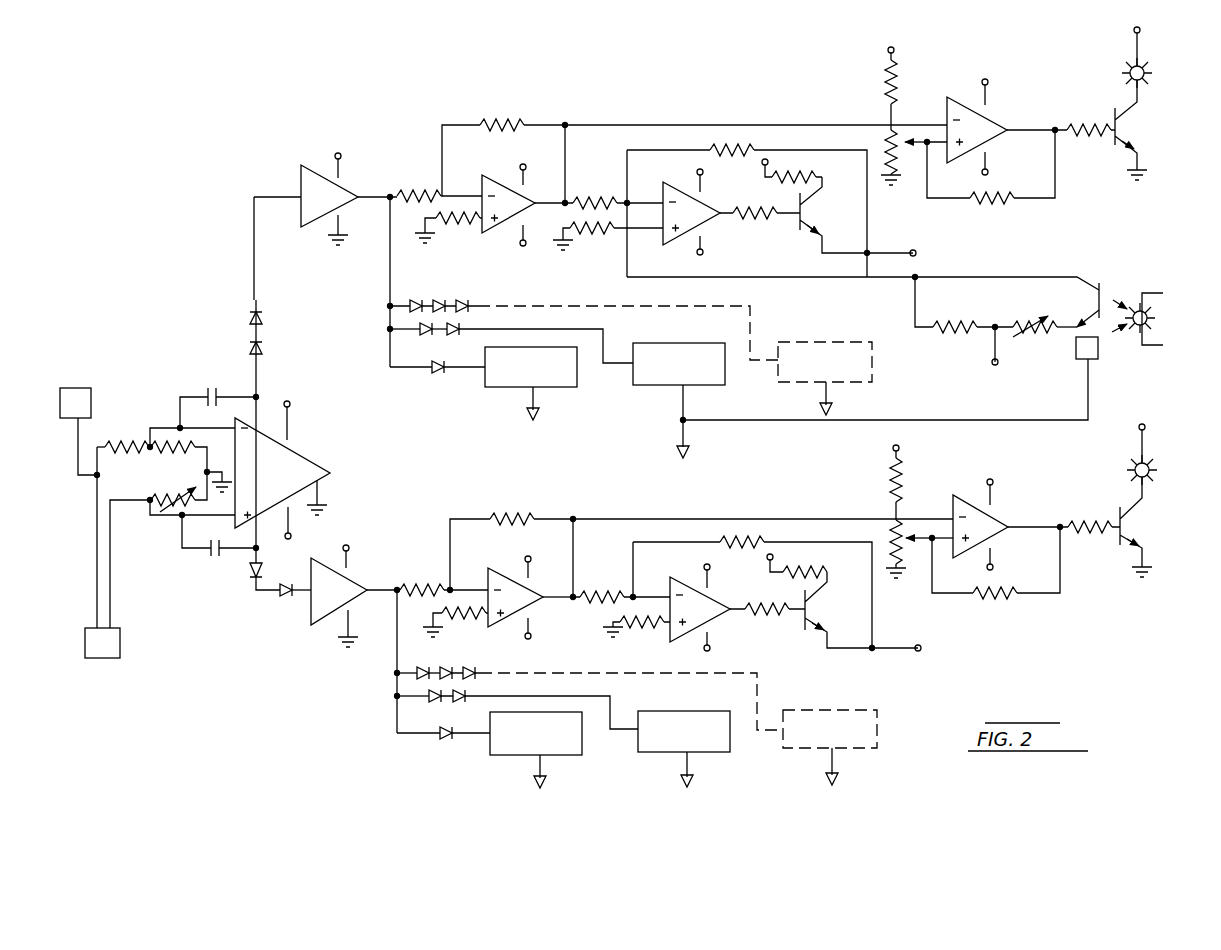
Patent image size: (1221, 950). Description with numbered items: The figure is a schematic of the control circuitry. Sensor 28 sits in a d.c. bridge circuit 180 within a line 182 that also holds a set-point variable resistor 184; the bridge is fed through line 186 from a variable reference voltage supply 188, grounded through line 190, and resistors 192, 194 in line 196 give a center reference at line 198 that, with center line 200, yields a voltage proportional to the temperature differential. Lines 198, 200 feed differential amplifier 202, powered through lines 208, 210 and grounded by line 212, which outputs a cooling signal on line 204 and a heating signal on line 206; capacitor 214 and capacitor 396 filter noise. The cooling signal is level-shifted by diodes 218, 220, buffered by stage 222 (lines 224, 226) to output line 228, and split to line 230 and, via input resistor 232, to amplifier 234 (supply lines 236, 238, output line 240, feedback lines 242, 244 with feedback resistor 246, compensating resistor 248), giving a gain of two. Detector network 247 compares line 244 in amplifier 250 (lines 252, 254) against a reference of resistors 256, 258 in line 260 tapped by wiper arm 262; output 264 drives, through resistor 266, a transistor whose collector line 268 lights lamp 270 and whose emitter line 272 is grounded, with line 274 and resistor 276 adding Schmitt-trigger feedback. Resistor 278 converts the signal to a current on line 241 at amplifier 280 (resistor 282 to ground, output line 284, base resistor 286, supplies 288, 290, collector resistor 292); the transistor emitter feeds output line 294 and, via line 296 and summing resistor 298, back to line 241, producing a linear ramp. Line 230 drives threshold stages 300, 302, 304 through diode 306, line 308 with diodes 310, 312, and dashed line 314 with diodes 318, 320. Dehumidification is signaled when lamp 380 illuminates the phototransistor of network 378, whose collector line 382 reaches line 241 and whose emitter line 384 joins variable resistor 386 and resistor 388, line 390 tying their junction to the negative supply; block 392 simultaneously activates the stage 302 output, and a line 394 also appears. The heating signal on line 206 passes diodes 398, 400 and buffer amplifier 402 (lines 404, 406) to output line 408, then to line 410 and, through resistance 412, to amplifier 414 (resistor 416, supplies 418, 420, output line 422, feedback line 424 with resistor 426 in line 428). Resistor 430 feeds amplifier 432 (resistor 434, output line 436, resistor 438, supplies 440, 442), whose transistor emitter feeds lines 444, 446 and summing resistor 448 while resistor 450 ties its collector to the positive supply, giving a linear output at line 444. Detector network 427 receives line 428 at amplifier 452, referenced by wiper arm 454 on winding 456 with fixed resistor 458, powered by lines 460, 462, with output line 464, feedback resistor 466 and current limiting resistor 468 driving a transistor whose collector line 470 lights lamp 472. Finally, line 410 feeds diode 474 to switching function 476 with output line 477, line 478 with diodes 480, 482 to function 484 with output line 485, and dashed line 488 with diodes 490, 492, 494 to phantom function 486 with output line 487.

The sensor 28 is at (122, 652).
The d.c. bridge circuit 180 is at (88, 509).
The line 182 is at (113, 590).
The variable resistor 184 is at (162, 498).
The line 186 is at (76, 445).
The variable reference d.c. voltage supply 188 is at (72, 388).
The line 190 is at (206, 470).
The resistor 192 is at (130, 446).
The resistor 194 is at (165, 455).
The line 196 is at (150, 426).
The center reference line 198 is at (196, 420).
The center line 200 is at (180, 520).
The differential amplifier 202 is at (307, 453).
The output line 204 is at (262, 378).
The output line 206 is at (259, 549).
The line 208 is at (295, 428).
The line 210 is at (297, 522).
The line 212 is at (321, 490).
The capacitor 214 is at (212, 385).
The diode 218 is at (247, 344).
The diode 220 is at (247, 314).
The buffer amplification stage 222 is at (317, 173).
The line 224 is at (342, 172).
The line 226 is at (330, 240).
The output line 228 is at (389, 198).
The line 230 is at (388, 291).
The input resistor 232 is at (425, 190).
The differential amplifier 234 is at (491, 182).
The line 236 is at (512, 170).
The line 238 is at (520, 240).
The output line 240 is at (528, 191).
The line 241 is at (634, 206).
The line 242 is at (568, 144).
The line 244 is at (562, 123).
The feedback resistor 246 is at (500, 122).
The detector network 247 is at (818, 80).
The compensating resistor 248 is at (466, 225).
The differential amplifier 250 is at (985, 120).
The line 252 is at (980, 88).
The line 254 is at (993, 156).
The resistor 256 is at (901, 73).
The resistor 258 is at (898, 141).
The line 260 is at (887, 114).
The wiper arm 262 is at (922, 172).
The output 264 is at (1048, 124).
The current limiting resistor 266 is at (1103, 131).
The line 268 is at (1143, 100).
The indicator lamp 270 is at (1147, 71).
The line 272 is at (1145, 156).
The line 274 is at (1050, 198).
The resistor 276 is at (978, 198).
The resistor 278 is at (604, 199).
The differential amplifier 280 is at (682, 241).
The resistor 282 is at (611, 239).
The output line 284 is at (742, 212).
The base resistor 286 is at (776, 221).
The line 288 is at (703, 193).
The line 290 is at (704, 236).
The resistor 292 is at (798, 174).
The output line 294 is at (893, 253).
The line 296 is at (762, 148).
The summing resistor 298 is at (716, 146).
The threshold switching stage 300 is at (562, 387).
The threshold switching stage 302 is at (713, 385).
The threshold switching stage 304 is at (873, 378).
The diode 306 is at (439, 372).
The line 308 is at (605, 335).
The diode 310 is at (417, 300).
The diode 312 is at (458, 328).
The dashed line 314 is at (560, 306).
The diode 318 is at (447, 302).
The diode 320 is at (472, 306).
The signal network 378 is at (903, 322).
The lamp 380 is at (1152, 316).
The line 382 is at (821, 277).
The line 384 is at (1064, 330).
The variable resistor 386 is at (1042, 320).
The resistor 388 is at (950, 322).
The line 390 is at (992, 350).
The switching arrangement block 392 is at (1098, 352).
The conductor 394 is at (1088, 406).
The capacitor 396 is at (222, 555).
The diode 398 is at (256, 586).
The diode 400 is at (285, 600).
The buffer amplifier 402 is at (322, 612).
The line 404 is at (350, 568).
The line 406 is at (350, 615).
The output line 408 is at (420, 576).
The line 410 is at (394, 674).
The input resistance 412 is at (448, 579).
The differential amplifier 414 is at (504, 574).
The compensating resistor 416 is at (480, 616).
The line 418 is at (533, 569).
The line 420 is at (525, 619).
The output line 422 is at (548, 599).
The line 424 is at (573, 528).
The feedback resistor 426 is at (504, 519).
The detector network 427 is at (1078, 462).
The line 428 is at (588, 519).
The resistor 430 is at (626, 597).
The differential amplifier 432 is at (686, 594).
The resistor 434 is at (632, 625).
The output line 436 is at (755, 607).
The resistor 438 is at (781, 610).
The line 440 is at (708, 585).
The line 442 is at (709, 632).
The line 444 is at (847, 654).
The line 446 is at (874, 644).
The summing resistor 448 is at (745, 542).
The resistor 450 is at (812, 568).
The differential amplifier 452 is at (966, 500).
The wiper arm 454 is at (932, 553).
The winding 456 is at (886, 536).
The fixed resistor 458 is at (888, 479).
The line 460 is at (996, 500).
The line 462 is at (1000, 549).
The output line 464 is at (1060, 527).
The feedback resistor 466 is at (993, 593).
The current limiting resistor 468 is at (1090, 533).
The line 470 is at (1143, 500).
The lamp 472 is at (1150, 470).
The diode 474 is at (448, 736).
The level sensitive switching function 476 is at (512, 750).
The output line 477 is at (546, 764).
The line 478 is at (610, 697).
The diode 480 is at (439, 696).
The diode 482 is at (465, 696).
The level sensitive switching function 484 is at (669, 750).
The output line 485 is at (698, 766).
The level sensitive switching arrangement 486 is at (814, 748).
The output line 487 is at (836, 772).
The dashed line 488 is at (552, 672).
The diode 490 is at (418, 672).
The diode 492 is at (449, 672).
The diode 494 is at (478, 672).